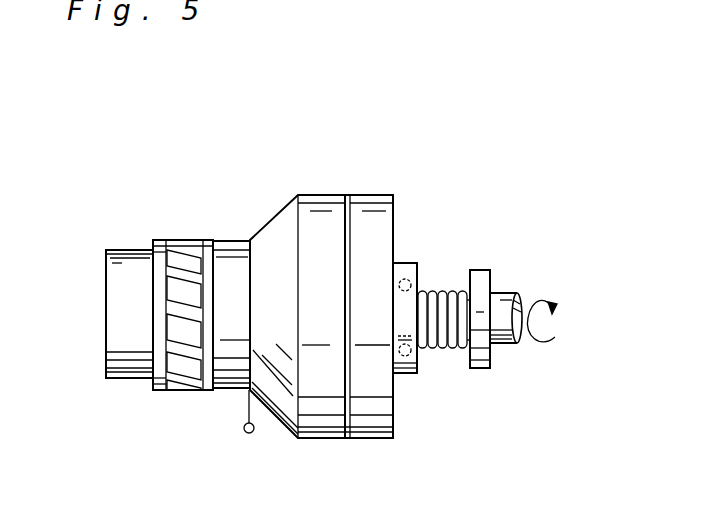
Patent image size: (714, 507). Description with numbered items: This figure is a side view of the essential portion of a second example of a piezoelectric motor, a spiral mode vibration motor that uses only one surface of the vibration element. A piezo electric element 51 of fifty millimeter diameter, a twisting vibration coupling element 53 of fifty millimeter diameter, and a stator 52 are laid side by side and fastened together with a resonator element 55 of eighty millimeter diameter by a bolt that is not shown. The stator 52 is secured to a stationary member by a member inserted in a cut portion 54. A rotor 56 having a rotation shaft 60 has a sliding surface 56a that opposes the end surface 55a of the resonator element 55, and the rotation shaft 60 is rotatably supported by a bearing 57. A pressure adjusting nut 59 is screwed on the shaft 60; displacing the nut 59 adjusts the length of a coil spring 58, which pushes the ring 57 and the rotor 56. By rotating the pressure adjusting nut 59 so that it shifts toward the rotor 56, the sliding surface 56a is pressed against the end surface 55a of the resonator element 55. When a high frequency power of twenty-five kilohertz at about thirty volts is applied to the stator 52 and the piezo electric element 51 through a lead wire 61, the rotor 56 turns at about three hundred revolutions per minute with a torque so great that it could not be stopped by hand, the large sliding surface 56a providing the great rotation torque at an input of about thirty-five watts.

The piezo electric element 51 is at (231, 241).
The stator 52 is at (120, 250).
The twisting vibration coupling element 53 is at (178, 240).
The cut portion 54 is at (125, 379).
The resonator element 55 is at (318, 195).
The end surface 55a is at (358, 195).
The rotor 56 is at (377, 195).
The sliding surface 56a is at (347, 428).
The bearing 57 is at (405, 263).
The coil spring 58 is at (440, 290).
The pressure adjusting nut 59 is at (481, 270).
The rotation shaft 60 is at (514, 296).
The lead wire 61 is at (246, 432).